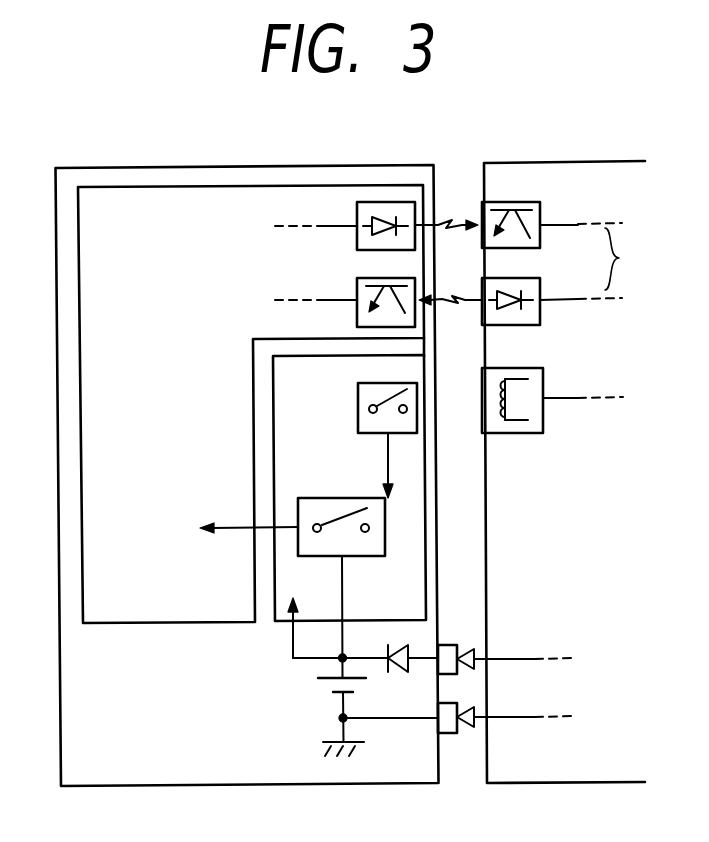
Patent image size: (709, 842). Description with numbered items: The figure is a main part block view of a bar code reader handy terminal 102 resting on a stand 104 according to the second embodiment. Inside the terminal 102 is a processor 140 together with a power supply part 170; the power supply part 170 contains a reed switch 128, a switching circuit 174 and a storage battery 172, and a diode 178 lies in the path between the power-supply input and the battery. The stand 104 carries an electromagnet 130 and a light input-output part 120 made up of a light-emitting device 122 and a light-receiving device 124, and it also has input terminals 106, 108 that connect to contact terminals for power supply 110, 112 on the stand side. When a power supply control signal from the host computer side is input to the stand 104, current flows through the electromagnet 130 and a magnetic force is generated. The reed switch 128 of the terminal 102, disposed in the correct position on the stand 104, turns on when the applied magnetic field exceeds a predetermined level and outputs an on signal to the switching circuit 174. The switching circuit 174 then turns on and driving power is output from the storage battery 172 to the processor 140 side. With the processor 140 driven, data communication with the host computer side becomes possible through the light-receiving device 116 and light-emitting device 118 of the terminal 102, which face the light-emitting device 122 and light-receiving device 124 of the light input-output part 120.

The bar code reader handy terminal 102 is at (222, 166).
The stand 104 is at (527, 162).
The input terminal 106 is at (450, 645).
The input terminal 108 is at (448, 733).
The contact terminal for power supply 110 is at (478, 655).
The contact terminal for power supply 112 is at (478, 713).
The light-receiving device 116 is at (356, 290).
The light-emitting device 118 is at (385, 201).
The light input-output part 120 is at (634, 259).
The light-emitting device 122 is at (541, 290).
The light-receiving device 124 is at (541, 232).
The reed switch 128 is at (357, 402).
The electromagnet 130 is at (543, 385).
The processor 140 is at (293, 185).
The power supply part 170 is at (424, 496).
The storage battery 172 is at (323, 675).
The switching circuit 174 is at (347, 558).
The diode 178 is at (392, 672).